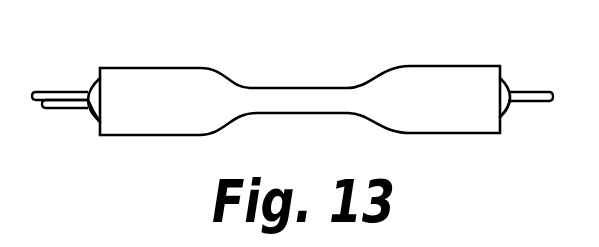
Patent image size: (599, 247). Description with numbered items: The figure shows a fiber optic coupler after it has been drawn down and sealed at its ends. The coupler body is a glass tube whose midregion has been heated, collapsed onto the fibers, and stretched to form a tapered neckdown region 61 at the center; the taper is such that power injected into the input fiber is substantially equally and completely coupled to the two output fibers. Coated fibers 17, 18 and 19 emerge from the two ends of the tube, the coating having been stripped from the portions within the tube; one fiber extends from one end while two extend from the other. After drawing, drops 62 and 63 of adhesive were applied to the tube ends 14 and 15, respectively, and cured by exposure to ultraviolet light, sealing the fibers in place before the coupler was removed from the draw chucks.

The end of the tube 14 is at (502, 68).
The end of the tube 15 is at (98, 71).
The coated fiber 17 is at (542, 83).
The coated fiber 18 is at (48, 84).
The coated fiber 19 is at (60, 118).
The neckdown region 61 is at (291, 88).
The drop of adhesive 62 is at (507, 110).
The drop of adhesive 63 is at (96, 123).